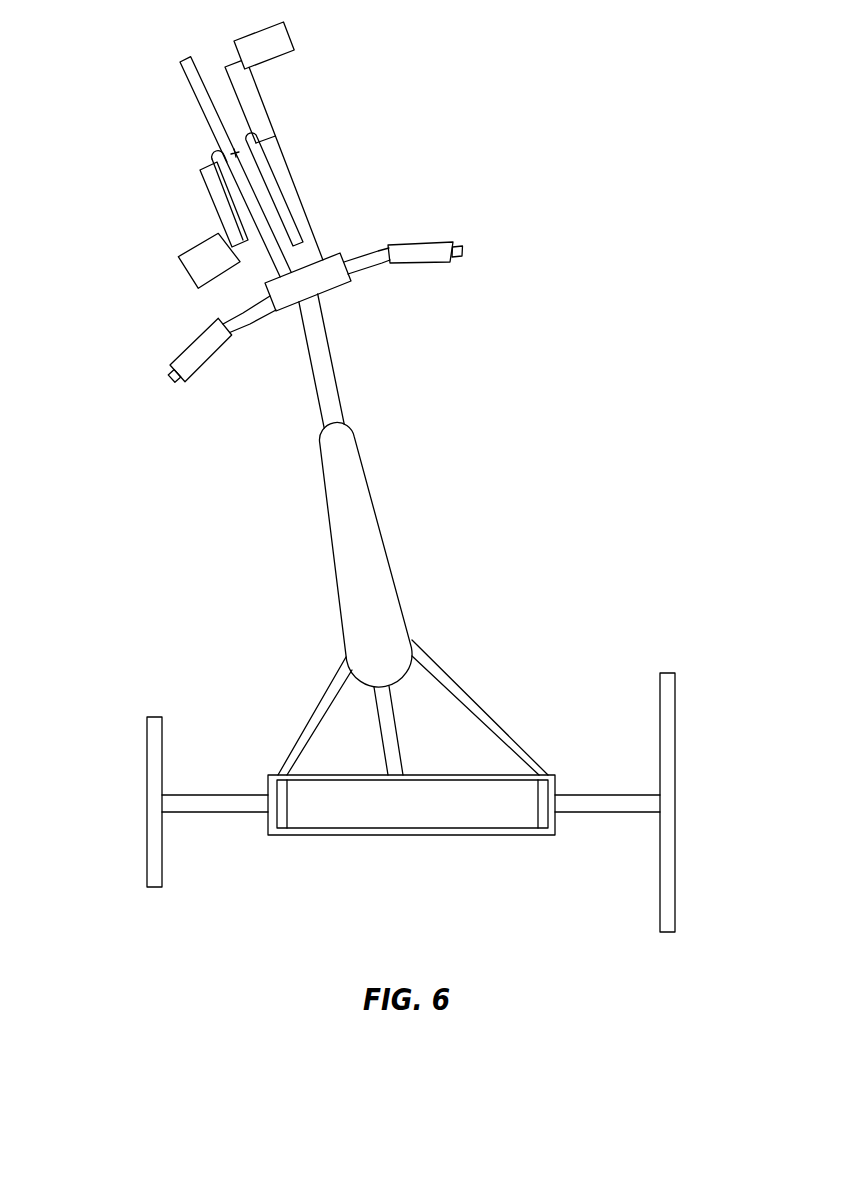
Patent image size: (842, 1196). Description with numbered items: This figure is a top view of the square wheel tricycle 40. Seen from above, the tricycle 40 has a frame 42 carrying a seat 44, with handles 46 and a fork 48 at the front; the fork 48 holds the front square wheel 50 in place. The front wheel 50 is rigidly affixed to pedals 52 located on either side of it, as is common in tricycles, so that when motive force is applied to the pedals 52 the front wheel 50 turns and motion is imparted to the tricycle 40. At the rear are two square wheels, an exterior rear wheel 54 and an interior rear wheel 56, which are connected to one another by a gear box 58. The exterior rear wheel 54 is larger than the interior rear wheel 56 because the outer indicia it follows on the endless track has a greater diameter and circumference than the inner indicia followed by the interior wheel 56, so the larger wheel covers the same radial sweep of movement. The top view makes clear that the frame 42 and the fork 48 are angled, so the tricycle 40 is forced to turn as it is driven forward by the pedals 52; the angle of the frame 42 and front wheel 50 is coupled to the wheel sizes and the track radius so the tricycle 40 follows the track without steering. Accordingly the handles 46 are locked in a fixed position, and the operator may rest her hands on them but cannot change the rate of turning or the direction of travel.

The tricycle 40 is at (580, 371).
The frame 42 is at (330, 395).
The seat 44 is at (370, 550).
The handles 46 is at (360, 265).
The fork 48 is at (292, 200).
The front square wheel 50 is at (209, 102).
The pedals 52 is at (267, 48).
The exterior rear square wheel 54 is at (665, 717).
The interior rear square wheel 56 is at (151, 740).
The gear box 58 is at (447, 830).